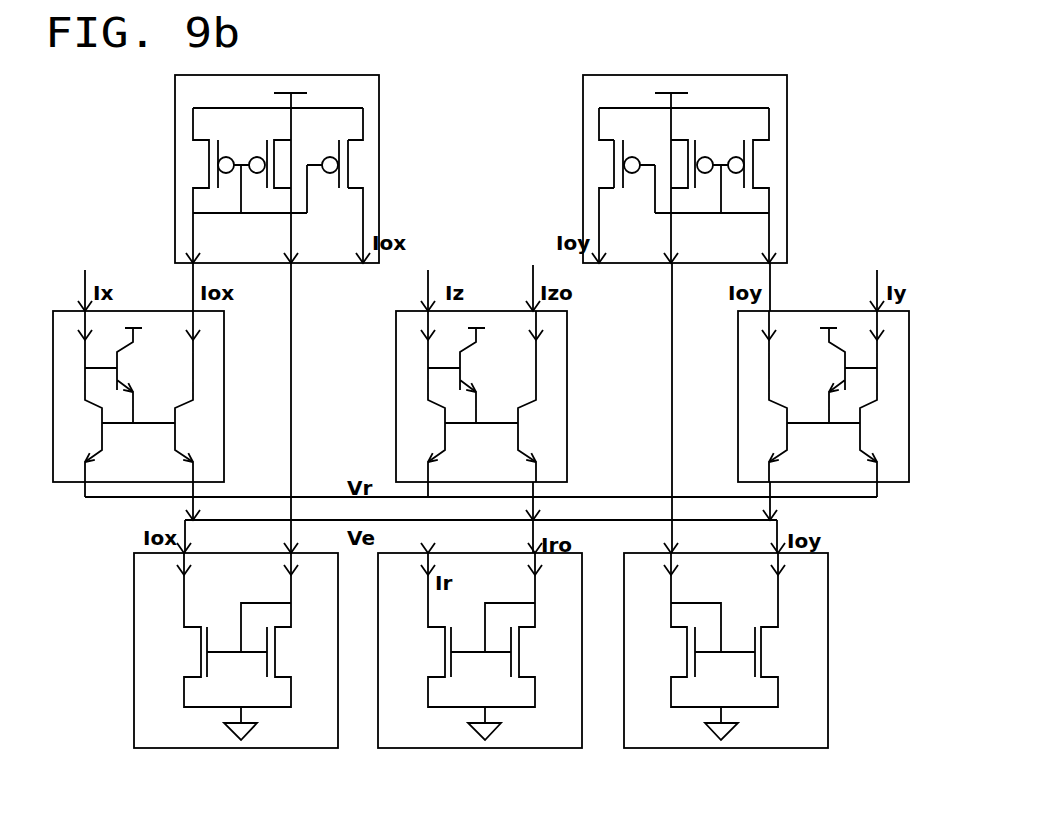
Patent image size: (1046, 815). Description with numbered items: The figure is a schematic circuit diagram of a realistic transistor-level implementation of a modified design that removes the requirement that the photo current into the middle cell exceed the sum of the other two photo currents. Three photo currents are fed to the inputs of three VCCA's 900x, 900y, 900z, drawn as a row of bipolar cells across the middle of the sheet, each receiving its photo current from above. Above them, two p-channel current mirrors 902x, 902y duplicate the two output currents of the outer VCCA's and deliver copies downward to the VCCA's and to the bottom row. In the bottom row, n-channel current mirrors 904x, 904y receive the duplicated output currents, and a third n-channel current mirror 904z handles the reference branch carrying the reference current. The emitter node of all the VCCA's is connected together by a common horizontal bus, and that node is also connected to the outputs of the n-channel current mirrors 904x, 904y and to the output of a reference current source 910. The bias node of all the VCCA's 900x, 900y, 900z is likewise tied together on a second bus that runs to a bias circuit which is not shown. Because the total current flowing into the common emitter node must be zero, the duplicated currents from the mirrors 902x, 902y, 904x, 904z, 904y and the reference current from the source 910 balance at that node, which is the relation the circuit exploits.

The p-channel current mirror 902x is at (370, 90).
The p-channel current mirror 902y is at (603, 88).
The VCCA 900x is at (217, 365).
The VCCA 900z is at (548, 375).
The VCCA 900y is at (750, 357).
The n-channel current mirror 904x is at (150, 628).
The n-channel current mirror 904z is at (480, 645).
The n-channel current mirror 904y is at (812, 618).
The reference current source 910 is at (577, 577).